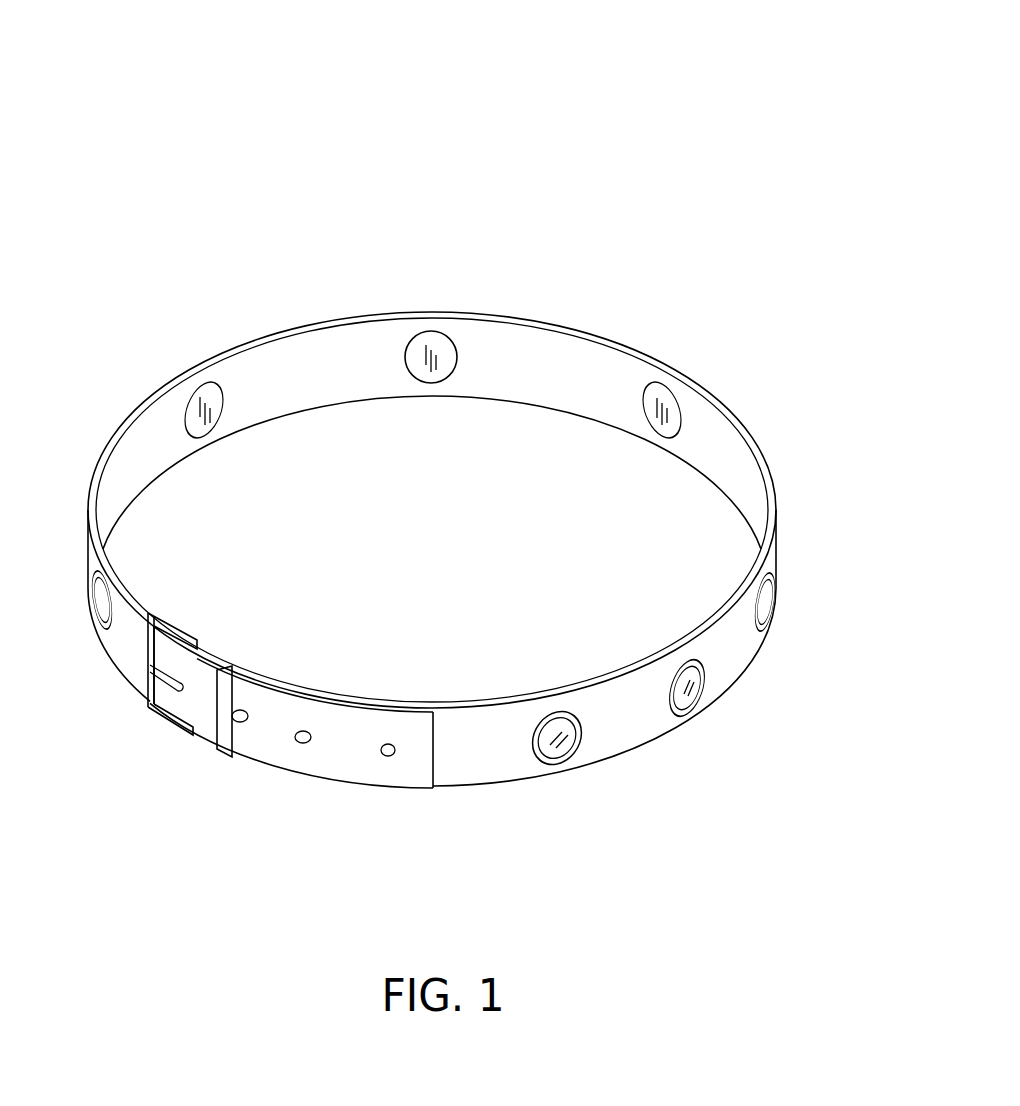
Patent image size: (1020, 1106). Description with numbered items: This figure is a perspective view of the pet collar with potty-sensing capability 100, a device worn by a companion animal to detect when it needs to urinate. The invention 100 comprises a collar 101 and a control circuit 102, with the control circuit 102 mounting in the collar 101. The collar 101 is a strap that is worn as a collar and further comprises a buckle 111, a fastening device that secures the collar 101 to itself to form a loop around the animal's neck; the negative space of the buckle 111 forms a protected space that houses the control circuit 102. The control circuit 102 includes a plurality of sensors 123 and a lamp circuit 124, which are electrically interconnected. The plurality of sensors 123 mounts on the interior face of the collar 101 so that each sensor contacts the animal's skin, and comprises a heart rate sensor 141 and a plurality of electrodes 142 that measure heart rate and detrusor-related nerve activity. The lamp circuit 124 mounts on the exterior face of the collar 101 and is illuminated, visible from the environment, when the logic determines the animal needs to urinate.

The pet collar with potty-sensing capability 100 is at (472, 509).
The collar 101 is at (335, 763).
The control circuit 102 is at (325, 93).
The buckle 111 is at (176, 752).
The plurality of sensors 123 is at (705, 133).
The lamp circuit 124 is at (830, 695).
The heart rate sensor 141 is at (662, 410).
The plurality of electrodes 142 is at (431, 357).